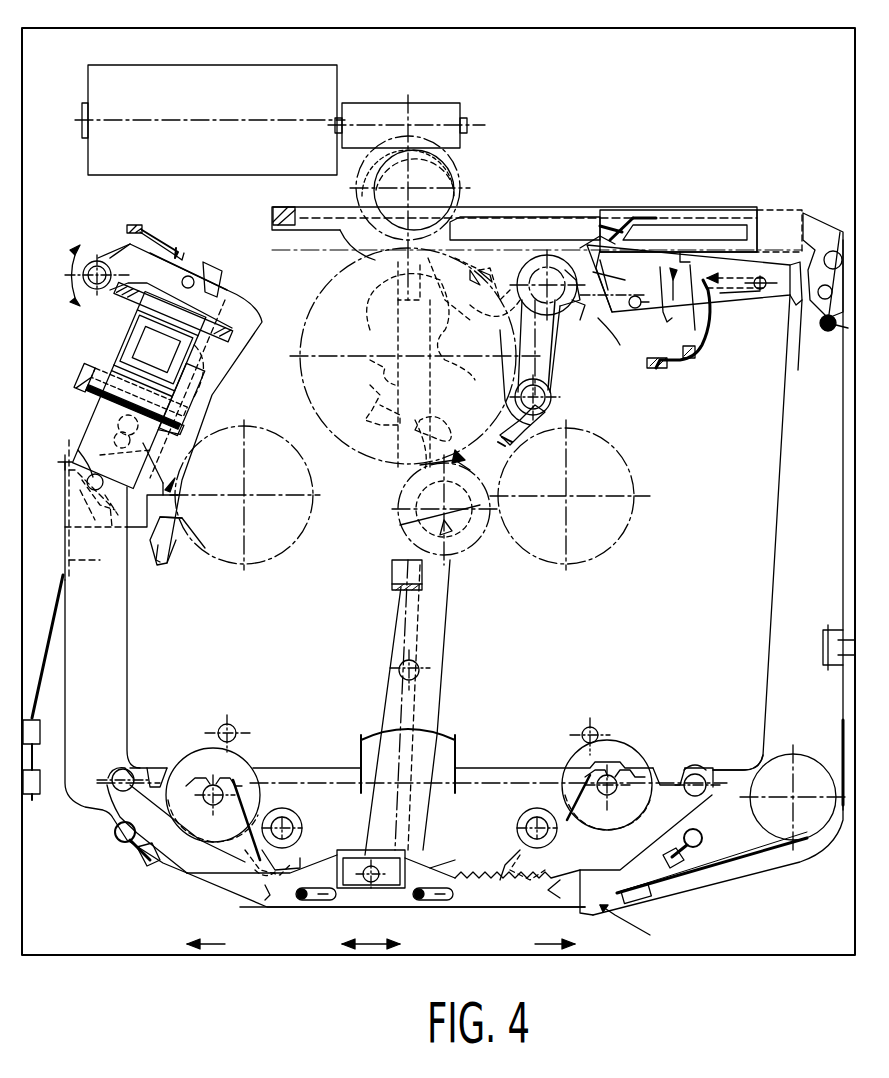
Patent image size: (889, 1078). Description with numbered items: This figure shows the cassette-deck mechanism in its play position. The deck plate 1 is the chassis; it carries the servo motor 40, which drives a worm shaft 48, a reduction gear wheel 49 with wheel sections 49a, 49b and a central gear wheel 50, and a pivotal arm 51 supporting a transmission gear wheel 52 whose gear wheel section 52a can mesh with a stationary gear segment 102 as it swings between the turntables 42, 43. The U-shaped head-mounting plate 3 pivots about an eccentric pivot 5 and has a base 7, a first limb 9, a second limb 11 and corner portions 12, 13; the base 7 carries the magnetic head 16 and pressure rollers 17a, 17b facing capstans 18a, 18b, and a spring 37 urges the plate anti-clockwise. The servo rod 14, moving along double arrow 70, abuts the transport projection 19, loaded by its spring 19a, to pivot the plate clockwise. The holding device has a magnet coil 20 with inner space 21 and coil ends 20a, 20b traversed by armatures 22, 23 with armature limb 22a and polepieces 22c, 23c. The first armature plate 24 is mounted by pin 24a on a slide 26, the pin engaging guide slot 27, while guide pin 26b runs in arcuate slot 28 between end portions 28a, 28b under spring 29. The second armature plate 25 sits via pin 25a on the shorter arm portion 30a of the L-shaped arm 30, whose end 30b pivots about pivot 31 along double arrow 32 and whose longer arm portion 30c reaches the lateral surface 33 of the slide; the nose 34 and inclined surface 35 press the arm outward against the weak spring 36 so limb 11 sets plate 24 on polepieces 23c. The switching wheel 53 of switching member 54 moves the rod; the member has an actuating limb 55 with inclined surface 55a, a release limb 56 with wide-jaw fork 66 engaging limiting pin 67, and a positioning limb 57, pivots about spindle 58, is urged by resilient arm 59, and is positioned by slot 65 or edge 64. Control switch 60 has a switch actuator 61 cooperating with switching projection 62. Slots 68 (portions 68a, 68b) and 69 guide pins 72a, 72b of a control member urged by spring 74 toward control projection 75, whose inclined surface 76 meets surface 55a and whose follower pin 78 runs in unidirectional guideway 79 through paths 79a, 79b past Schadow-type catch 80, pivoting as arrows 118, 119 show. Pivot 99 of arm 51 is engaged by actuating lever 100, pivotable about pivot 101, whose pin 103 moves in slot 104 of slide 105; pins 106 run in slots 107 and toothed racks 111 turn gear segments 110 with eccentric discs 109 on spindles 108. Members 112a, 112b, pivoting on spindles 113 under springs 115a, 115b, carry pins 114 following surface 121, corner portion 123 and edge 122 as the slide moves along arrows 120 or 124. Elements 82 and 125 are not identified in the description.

The deck plate 1 is at (766, 45).
The head-mounting plate 3 is at (631, 926).
The eccentric pivot 5 is at (795, 797).
The base 7 is at (512, 772).
The first limb 9 is at (772, 638).
The second limb 11 is at (118, 676).
The corner portion 12 is at (742, 772).
The corner portion 13 is at (122, 744).
The servo rod 14 is at (738, 212).
The magnetic head 16 is at (435, 740).
The pressure roller 17a is at (572, 762).
The pressure roller 17b is at (242, 761).
The capstan 18a is at (596, 727).
The capstan 18b is at (234, 724).
The transport projection 19 is at (828, 225).
The spring 19a is at (830, 280).
The magnet coil 20 is at (126, 344).
The coil end 20a is at (115, 362).
The coil end 20b is at (110, 322).
The inner space 21 is at (156, 349).
The armature 22 is at (80, 358).
The armature limb 22a is at (240, 369).
The polepieces 22c is at (124, 312).
The armature 23 is at (232, 385).
The polepieces 23c is at (95, 382).
The first armature plate 24 is at (90, 402).
The pin 24a is at (112, 426).
The second armature plate 25 is at (218, 271).
The pin 25a is at (190, 275).
The slide 26 is at (140, 530).
The guide pin 26b is at (80, 452).
The guide slot 27 is at (148, 450).
The arcuate slot 28 is at (108, 516).
The end portion 28a is at (105, 470).
The other end 28b is at (92, 546).
The spring 29 is at (62, 470).
The arm 30 is at (252, 286).
The shorter arm portion 30a is at (236, 272).
The end 30b is at (118, 255).
The longer arm portion 30c is at (172, 560).
The pivot 31 is at (78, 246).
The double arrow 32 is at (82, 276).
The lateral surface 33 is at (180, 520).
The nose 34 is at (177, 480).
The inclined surface 35 is at (158, 558).
The spring 36 is at (160, 240).
The spring 37 is at (710, 876).
The servo motor 40 is at (201, 69).
The turntable 42 is at (620, 455).
The turntable 43 is at (296, 448).
The worm shaft 48 is at (402, 106).
The reduction gear wheel 49 is at (462, 179).
The wheel section 49a is at (455, 196).
The wheel section 49b is at (450, 168).
The central gear wheel 50 is at (308, 290).
The pivotal arm 51 is at (400, 450).
The transmission gear wheel 52 is at (400, 506).
The gear wheel section 52a is at (470, 565).
The switching wheel 53 is at (524, 272).
The switching member 54 is at (572, 374).
The actuating limb 55 is at (524, 352).
The inclined surface 55a is at (573, 312).
The release limb 56 is at (370, 365).
The positioning limb 57 is at (466, 322).
The spindle 58 is at (552, 398).
The resilient arm 59 is at (514, 440).
The control switch 60 is at (472, 313).
The switch actuator 61 is at (458, 290).
The switching projection 62 is at (400, 282).
The edge 64 is at (315, 250).
The slot 65 is at (530, 216).
The wide-jaw fork 66 is at (368, 395).
The limiting pin 67 is at (450, 435).
The slot 68 is at (612, 300).
The slot portion 68a is at (606, 296).
The slot portion 68b is at (605, 266).
The slot 69 is at (748, 300).
The double arrow 70 is at (381, 944).
The guide pin 72a is at (655, 308).
The guide pin 72b is at (745, 308).
The spring 74 is at (703, 332).
The control projection 75 is at (792, 316).
The inclined surface 76 is at (609, 340).
The follower pin 78 is at (605, 228).
The unidirectional guideway 79 is at (690, 218).
The path 79a is at (665, 226).
The path 79b is at (684, 262).
The Schadow-type catch 80 is at (616, 226).
The stop 82 is at (273, 214).
The pivot 99 is at (466, 462).
The actuating lever 100 is at (437, 655).
The pivot 101 is at (404, 660).
The stationary gear segment 102 is at (392, 585).
The pin 103 is at (372, 892).
The slot 104 is at (412, 860).
The slide 105 is at (478, 902).
The pins 106 is at (369, 909).
The slots 107 is at (445, 902).
The spindles 108 is at (292, 813).
The eccentric discs 109 is at (296, 826).
The gear segments 110 is at (210, 818).
The toothed racks 111 is at (220, 900).
The member 112a is at (662, 770).
The member 112b is at (166, 770).
The spindles 113 is at (105, 778).
The pins 114 is at (420, 889).
The spring 115a is at (702, 840).
The spring 115b is at (120, 845).
The arrow 118 is at (687, 302).
The arrow 119 is at (660, 290).
The arrow 120 is at (220, 944).
The surface 121 is at (290, 862).
The edge 122 is at (248, 830).
The corner portion 123 is at (250, 862).
The arrow 124 is at (536, 944).
The gear 125 is at (366, 193).